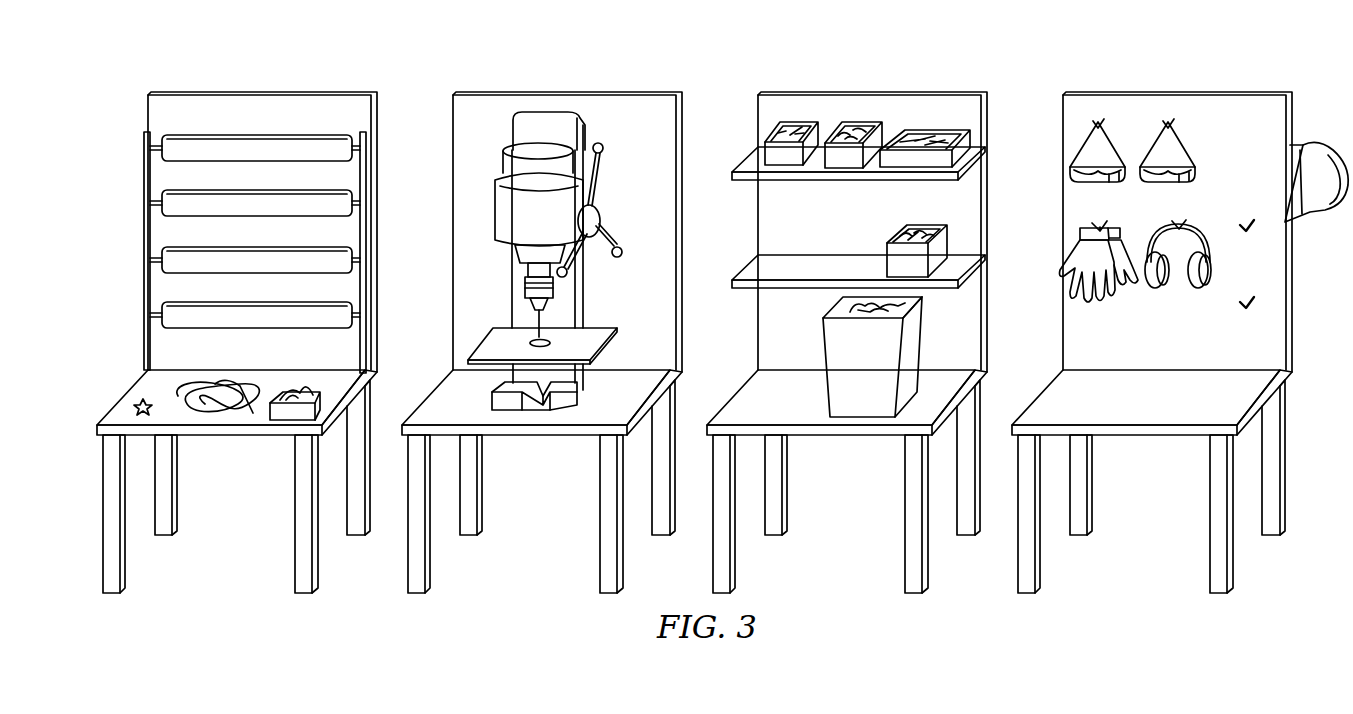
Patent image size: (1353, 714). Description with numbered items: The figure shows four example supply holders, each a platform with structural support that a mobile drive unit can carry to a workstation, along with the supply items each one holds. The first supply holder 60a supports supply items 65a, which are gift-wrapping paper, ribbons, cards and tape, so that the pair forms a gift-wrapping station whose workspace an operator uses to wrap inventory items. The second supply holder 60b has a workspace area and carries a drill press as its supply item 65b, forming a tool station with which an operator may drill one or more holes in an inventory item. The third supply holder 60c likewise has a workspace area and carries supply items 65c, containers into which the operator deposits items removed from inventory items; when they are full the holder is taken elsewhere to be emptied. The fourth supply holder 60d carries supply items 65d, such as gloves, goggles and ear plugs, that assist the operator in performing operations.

The supply holder 60a is at (246, 72).
The supply holder 60b is at (550, 72).
The supply holder 60c is at (897, 72).
The supply holder 60d is at (1203, 72).
The supply items 65a is at (190, 134).
The supply item 65b is at (493, 205).
The supply items 65c is at (900, 240).
The supply items 65d is at (1190, 148).